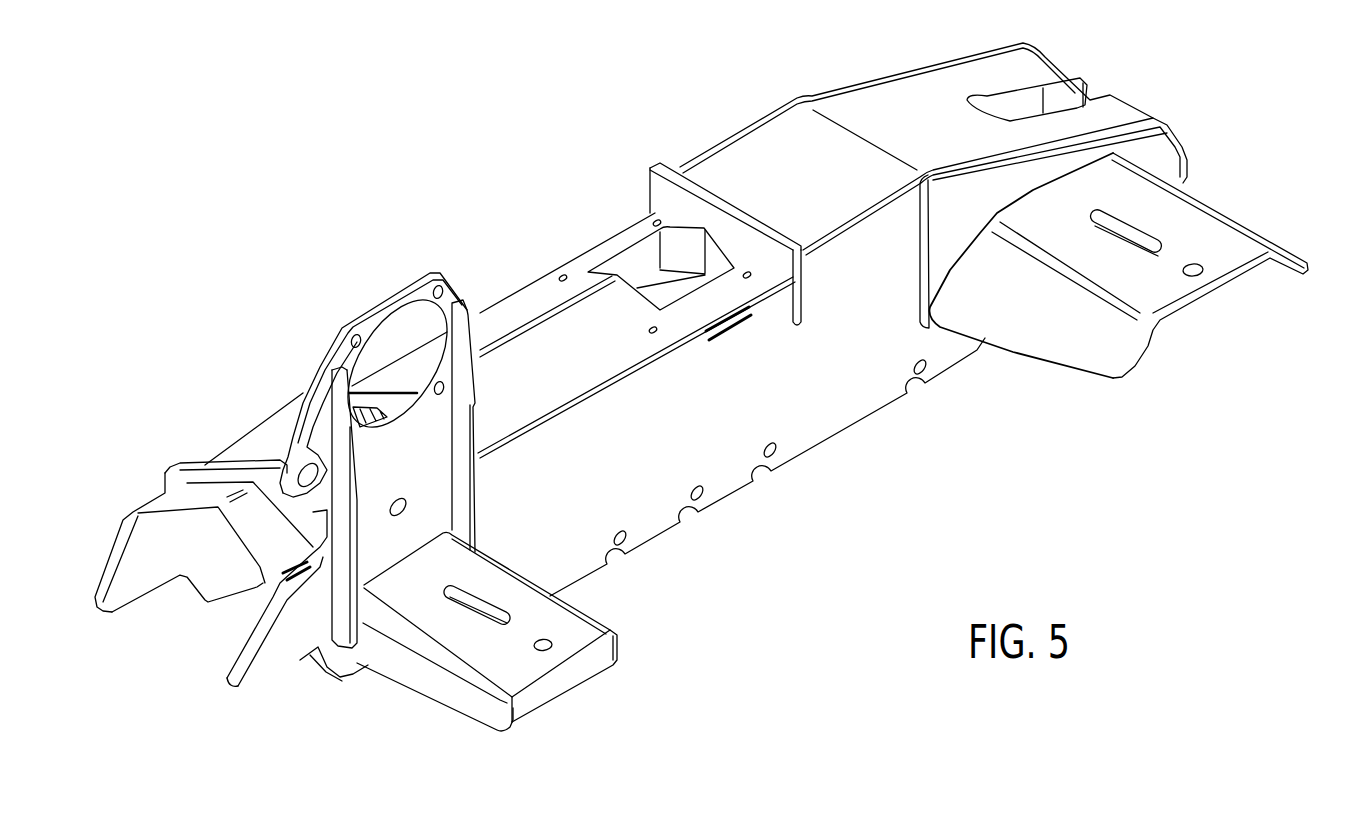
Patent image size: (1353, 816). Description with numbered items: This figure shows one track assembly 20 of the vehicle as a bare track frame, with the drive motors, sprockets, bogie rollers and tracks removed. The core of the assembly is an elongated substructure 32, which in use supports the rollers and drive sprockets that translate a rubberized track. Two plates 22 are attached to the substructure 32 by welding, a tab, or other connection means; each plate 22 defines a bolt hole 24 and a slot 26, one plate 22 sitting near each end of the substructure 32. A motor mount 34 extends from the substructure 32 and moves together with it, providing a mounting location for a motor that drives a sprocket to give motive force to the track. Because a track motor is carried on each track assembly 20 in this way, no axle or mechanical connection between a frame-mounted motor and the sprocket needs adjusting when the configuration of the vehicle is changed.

The track assembly 20 is at (606, 95).
The plate 22 is at (433, 687).
The bolt hole 24 is at (543, 652).
The slot 26 is at (503, 611).
The substructure 32 is at (530, 307).
The motor mount 34 is at (332, 347).